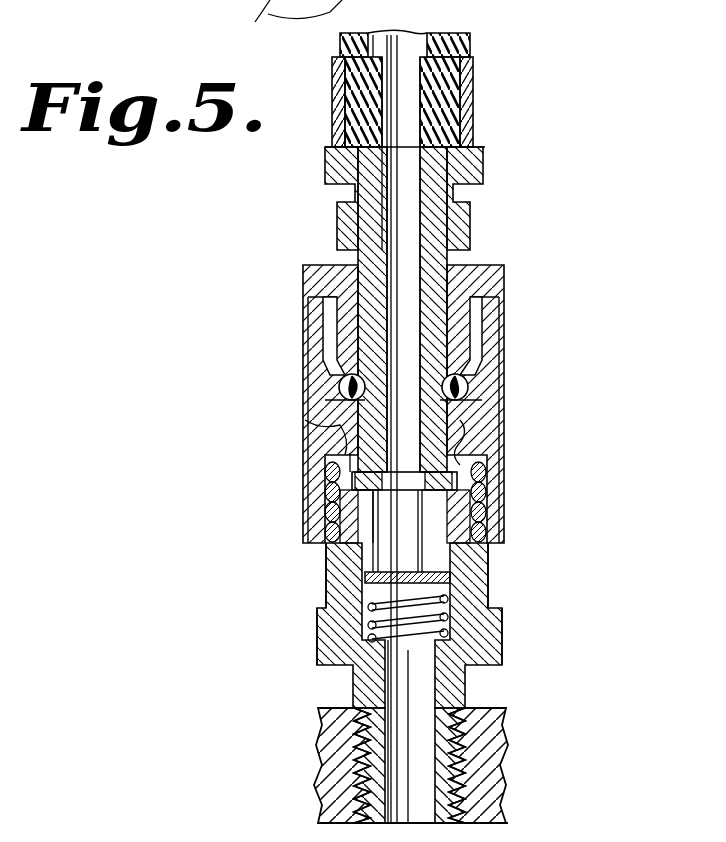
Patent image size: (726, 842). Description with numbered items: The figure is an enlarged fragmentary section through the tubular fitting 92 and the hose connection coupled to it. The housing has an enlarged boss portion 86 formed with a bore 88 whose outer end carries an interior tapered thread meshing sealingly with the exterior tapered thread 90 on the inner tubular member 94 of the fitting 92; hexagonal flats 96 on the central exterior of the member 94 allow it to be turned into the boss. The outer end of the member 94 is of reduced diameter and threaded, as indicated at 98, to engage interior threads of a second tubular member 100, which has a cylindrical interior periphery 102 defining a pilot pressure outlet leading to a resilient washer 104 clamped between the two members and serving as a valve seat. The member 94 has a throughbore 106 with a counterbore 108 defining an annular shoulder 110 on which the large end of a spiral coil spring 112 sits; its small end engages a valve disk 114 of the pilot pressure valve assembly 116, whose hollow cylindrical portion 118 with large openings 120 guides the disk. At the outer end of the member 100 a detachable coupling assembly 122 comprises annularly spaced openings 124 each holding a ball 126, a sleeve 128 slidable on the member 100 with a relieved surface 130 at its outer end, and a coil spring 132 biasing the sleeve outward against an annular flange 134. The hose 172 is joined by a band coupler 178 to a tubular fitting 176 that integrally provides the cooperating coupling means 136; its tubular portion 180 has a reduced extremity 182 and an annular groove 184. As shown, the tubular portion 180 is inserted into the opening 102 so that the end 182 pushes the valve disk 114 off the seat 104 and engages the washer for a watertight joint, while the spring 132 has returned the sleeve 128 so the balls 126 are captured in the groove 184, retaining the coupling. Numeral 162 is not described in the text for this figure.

The connecting line 162 is at (261, 19).
The hose 172 is at (440, 36).
The band coupler 178 is at (470, 82).
The tubular fitting 176 is at (455, 112).
The detachable interengaging coupling means 136 is at (478, 208).
The tubular portion 180 is at (366, 262).
The annular flange 134 is at (500, 282).
The relieved interior peripheral surface 130 is at (330, 318).
The annular groove 184 is at (462, 372).
The annularly spaced openings 124 is at (342, 385).
The detachable interengaging coupling assembly 122 is at (506, 370).
The ball 126 is at (352, 388).
The second tubular member 100 is at (470, 418).
The sleeve 128 is at (318, 414).
The cylindrical interior periphery 102 is at (470, 440).
The resilient washer 104 is at (330, 462).
The cylindrical portion 118 is at (470, 456).
The reduced diameter extremity 182 is at (355, 500).
The openings 120 is at (460, 486).
The coil spring 132 is at (372, 512).
The pilot pressure valve assembly 116 is at (425, 508).
The counterbore 108 is at (340, 528).
The threaded reduced-diameter end 98 is at (490, 562).
The valve disk 114 is at (330, 572).
The inner tubular member 94 is at (492, 592).
The spiral coil spring 112 is at (362, 590).
The annular shoulder 110 is at (458, 630).
The tubular fitting 92 is at (316, 632).
The hexagonal flats 96 is at (504, 640).
The throughbore 106 is at (392, 683).
The enlarged boss portion 86 is at (505, 712).
The exterior tapered thread 90 is at (490, 747).
The bore 88 is at (482, 805).